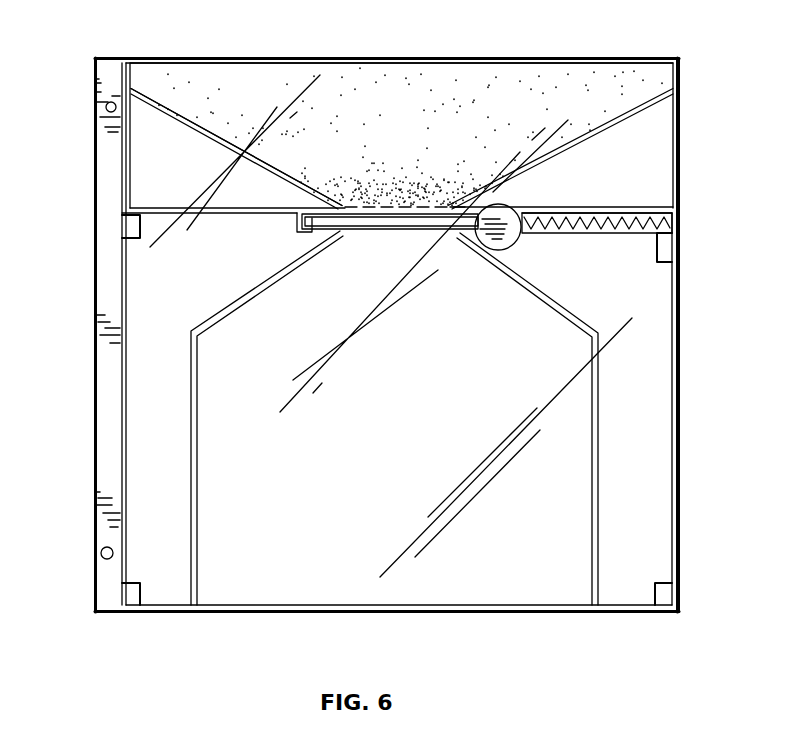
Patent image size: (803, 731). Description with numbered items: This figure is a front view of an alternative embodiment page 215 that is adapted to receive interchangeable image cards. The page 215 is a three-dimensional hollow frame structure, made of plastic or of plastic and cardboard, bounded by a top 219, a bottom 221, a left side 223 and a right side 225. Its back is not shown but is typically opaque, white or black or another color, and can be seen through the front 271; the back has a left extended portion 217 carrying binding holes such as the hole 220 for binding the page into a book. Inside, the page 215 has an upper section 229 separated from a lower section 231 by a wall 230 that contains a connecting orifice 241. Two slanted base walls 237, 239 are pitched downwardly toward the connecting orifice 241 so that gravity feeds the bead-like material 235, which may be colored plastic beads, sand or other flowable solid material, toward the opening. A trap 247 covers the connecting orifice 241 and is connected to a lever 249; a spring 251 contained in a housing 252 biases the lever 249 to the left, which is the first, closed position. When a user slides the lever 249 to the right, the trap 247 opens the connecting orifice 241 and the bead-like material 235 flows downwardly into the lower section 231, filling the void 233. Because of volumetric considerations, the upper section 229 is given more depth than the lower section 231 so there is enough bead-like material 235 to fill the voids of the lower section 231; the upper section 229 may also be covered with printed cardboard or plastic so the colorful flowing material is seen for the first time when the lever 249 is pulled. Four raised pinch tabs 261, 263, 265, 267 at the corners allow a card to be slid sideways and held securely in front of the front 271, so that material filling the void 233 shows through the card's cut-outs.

The page 215 is at (684, 415).
The left extended portion 217 is at (103, 295).
The top 219 is at (330, 57).
The hole 220 is at (106, 104).
The bottom 221 is at (320, 614).
The left side 223 is at (120, 380).
The right side 225 is at (684, 516).
The upper section 229 is at (213, 92).
The wall 230 is at (163, 203).
The lower section 231 is at (168, 513).
The void 233 is at (272, 465).
The bead-like material 235 is at (398, 158).
The slanted base wall 237 is at (603, 137).
The slanted base wall 239 is at (200, 137).
The connecting orifice 241 is at (420, 213).
The trap 247 is at (382, 229).
The lever 249 is at (485, 253).
The spring 251 is at (617, 228).
The housing 252 is at (605, 213).
The raised pinch tab 261 is at (128, 222).
The raised pinch tab 263 is at (132, 595).
The raised pinch tab 265 is at (670, 247).
The raised pinch tab 267 is at (668, 602).
The front 271 is at (655, 402).